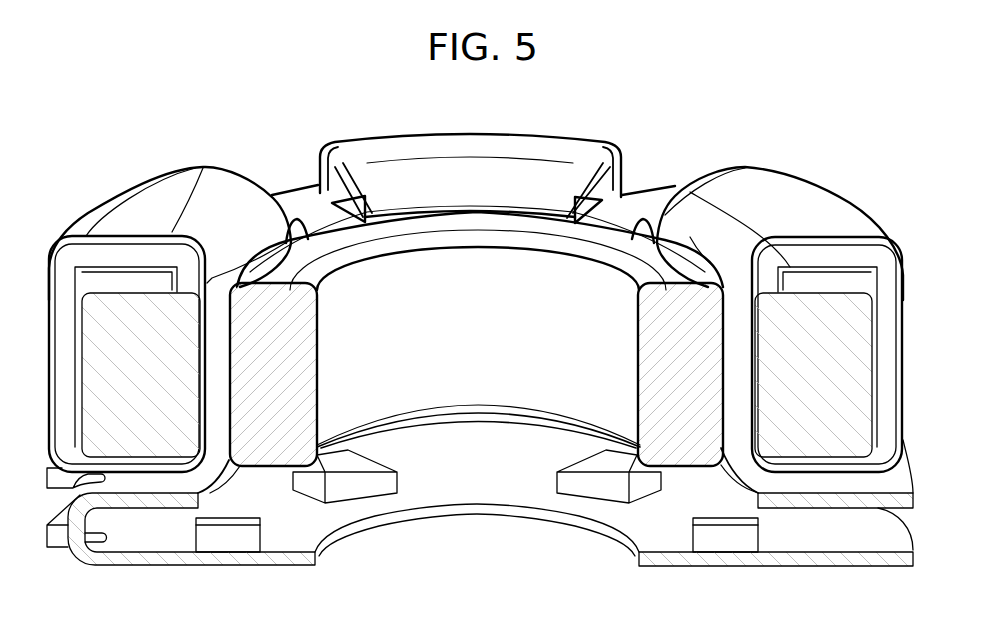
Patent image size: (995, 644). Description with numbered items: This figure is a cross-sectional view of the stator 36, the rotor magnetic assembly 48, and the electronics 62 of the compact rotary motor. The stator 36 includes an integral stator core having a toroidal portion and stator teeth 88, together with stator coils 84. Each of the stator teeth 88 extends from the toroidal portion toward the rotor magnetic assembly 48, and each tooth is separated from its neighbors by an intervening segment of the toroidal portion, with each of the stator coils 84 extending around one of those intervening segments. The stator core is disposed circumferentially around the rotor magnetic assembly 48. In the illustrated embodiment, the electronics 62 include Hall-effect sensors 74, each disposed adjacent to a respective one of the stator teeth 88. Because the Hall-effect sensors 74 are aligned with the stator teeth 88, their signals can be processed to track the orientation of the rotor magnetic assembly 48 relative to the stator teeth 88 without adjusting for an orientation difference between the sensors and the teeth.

The stator 36 is at (663, 104).
The rotor magnetic assembly 48 is at (458, 343).
The electronics 62 is at (848, 530).
The Hall-effect sensors 74 is at (376, 494).
The stator coils 84 is at (423, 136).
The stator teeth 88 is at (327, 217).